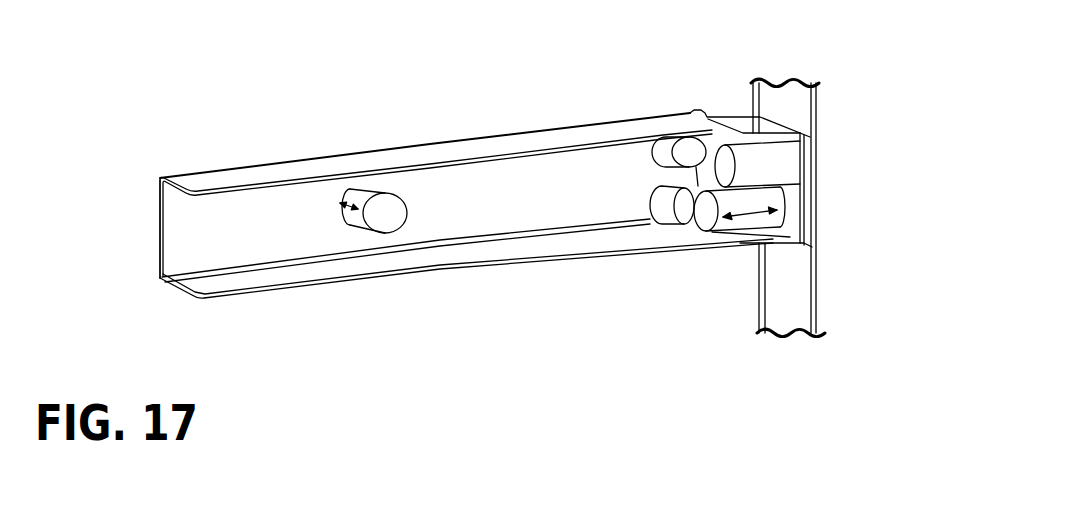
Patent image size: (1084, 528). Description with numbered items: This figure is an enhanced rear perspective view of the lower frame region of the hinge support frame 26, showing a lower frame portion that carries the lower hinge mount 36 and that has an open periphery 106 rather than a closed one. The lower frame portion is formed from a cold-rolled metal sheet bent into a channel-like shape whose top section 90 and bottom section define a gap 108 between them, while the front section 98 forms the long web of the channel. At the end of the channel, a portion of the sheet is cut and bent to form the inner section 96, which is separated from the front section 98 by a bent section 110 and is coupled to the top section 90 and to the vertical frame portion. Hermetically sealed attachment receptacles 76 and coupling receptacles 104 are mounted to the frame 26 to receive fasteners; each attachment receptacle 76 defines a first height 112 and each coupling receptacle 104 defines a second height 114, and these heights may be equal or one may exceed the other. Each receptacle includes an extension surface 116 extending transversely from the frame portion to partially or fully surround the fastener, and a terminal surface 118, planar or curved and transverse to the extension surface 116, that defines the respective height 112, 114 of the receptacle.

The hinge support frame 26 is at (817, 95).
The lower hinge mount 36 is at (414, 175).
The attachment receptacle 76 is at (615, 214).
The top section 90 is at (263, 175).
The inner section 96 is at (789, 123).
The front section 98 is at (452, 197).
The coupling receptacle 104 is at (753, 200).
The open periphery 106 is at (203, 176).
The gap 108 is at (197, 225).
The bent section 110 is at (718, 110).
The first height 112 is at (341, 210).
The second height 114 is at (797, 246).
The extension surface 116 is at (355, 196).
The terminal surface 118 is at (616, 185).